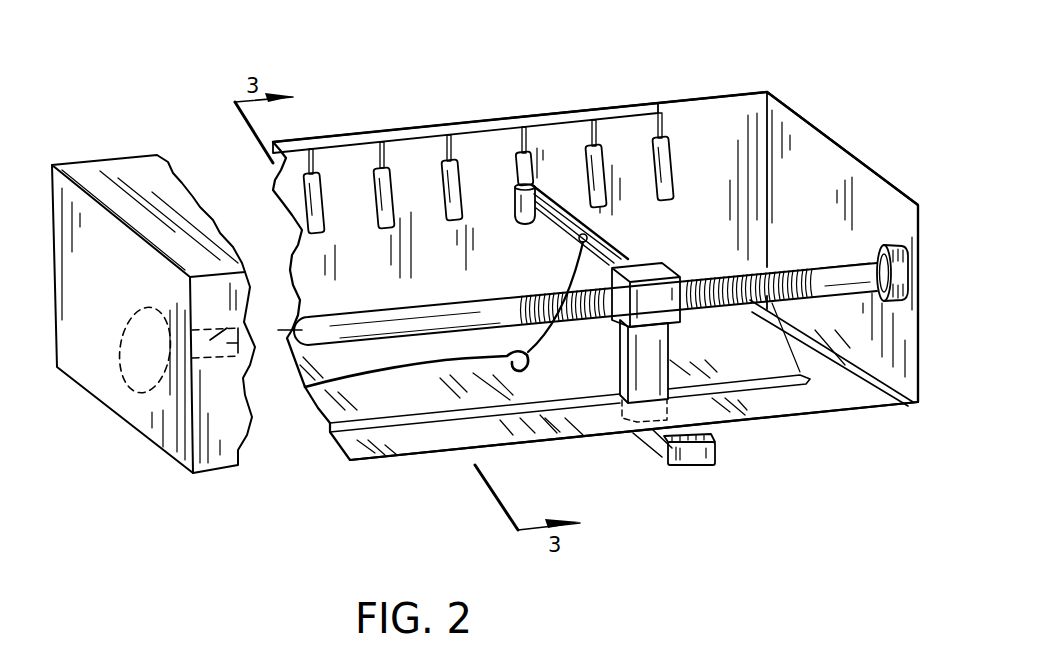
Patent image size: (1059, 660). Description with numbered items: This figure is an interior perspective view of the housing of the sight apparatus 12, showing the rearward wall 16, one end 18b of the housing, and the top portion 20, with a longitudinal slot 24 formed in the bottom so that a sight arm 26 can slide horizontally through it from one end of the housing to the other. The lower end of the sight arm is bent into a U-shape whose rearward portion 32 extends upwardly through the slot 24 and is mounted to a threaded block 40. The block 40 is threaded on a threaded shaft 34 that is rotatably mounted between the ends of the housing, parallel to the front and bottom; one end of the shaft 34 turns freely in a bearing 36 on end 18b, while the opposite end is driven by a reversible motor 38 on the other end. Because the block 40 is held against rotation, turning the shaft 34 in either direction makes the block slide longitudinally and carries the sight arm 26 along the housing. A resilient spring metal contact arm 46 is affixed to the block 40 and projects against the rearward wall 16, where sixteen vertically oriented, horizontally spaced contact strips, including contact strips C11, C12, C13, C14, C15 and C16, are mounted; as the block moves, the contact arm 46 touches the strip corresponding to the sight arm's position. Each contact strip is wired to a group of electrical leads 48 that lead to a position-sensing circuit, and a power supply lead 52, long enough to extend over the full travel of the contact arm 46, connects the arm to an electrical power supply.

The sight apparatus 12 is at (797, 128).
The rearward wall 16 is at (357, 261).
The end 18b is at (840, 168).
The top portion 20 is at (363, 393).
The longitudinal slot 24 is at (440, 420).
The sight arm 26 is at (633, 450).
The rearward portion 32 is at (653, 357).
The threaded shaft 34 is at (246, 295).
The bearing 36 is at (907, 278).
The reversible motor 38 is at (140, 392).
The threaded block 40 is at (653, 268).
The contact arm 46 is at (618, 250).
The electrical leads 48 is at (475, 130).
The power supply lead 52 is at (432, 367).
The contact strip C11 is at (315, 173).
The contact strip C12 is at (385, 167).
The contact strip C13 is at (458, 160).
The contact strip C14 is at (532, 150).
The contact strip C15 is at (607, 143).
The contact strip C16 is at (665, 137).